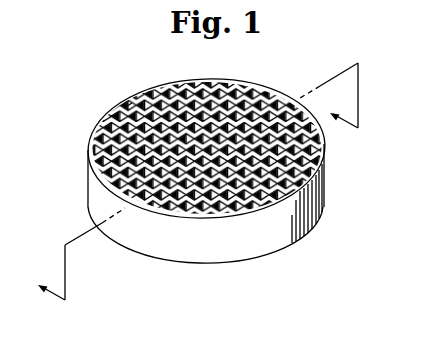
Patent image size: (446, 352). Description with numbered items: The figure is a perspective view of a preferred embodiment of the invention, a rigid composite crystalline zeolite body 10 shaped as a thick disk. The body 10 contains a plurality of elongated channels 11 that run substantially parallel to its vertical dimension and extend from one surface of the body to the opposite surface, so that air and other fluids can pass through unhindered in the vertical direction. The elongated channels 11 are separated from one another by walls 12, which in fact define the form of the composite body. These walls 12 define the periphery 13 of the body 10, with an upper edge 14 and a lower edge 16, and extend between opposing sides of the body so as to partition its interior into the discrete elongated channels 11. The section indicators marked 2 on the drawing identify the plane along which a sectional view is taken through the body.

The rigid composite body 10 is at (226, 177).
The elongated channels 11 is at (115, 114).
The walls 12 is at (172, 103).
The periphery 13 is at (263, 90).
The upper edge 14 is at (167, 219).
The lower edge 16 is at (207, 264).
The section line 2- 2 is at (193, 181).